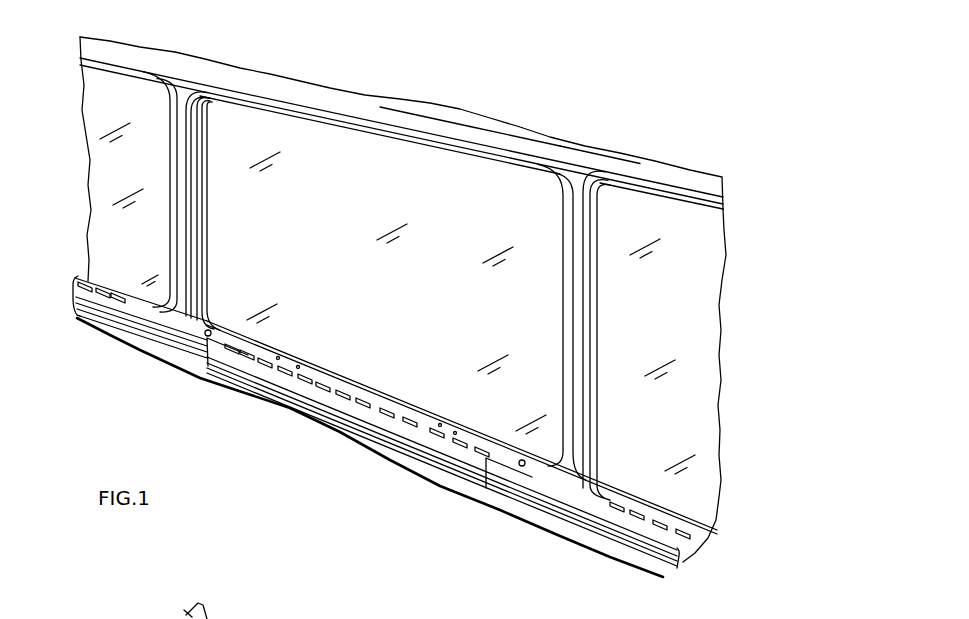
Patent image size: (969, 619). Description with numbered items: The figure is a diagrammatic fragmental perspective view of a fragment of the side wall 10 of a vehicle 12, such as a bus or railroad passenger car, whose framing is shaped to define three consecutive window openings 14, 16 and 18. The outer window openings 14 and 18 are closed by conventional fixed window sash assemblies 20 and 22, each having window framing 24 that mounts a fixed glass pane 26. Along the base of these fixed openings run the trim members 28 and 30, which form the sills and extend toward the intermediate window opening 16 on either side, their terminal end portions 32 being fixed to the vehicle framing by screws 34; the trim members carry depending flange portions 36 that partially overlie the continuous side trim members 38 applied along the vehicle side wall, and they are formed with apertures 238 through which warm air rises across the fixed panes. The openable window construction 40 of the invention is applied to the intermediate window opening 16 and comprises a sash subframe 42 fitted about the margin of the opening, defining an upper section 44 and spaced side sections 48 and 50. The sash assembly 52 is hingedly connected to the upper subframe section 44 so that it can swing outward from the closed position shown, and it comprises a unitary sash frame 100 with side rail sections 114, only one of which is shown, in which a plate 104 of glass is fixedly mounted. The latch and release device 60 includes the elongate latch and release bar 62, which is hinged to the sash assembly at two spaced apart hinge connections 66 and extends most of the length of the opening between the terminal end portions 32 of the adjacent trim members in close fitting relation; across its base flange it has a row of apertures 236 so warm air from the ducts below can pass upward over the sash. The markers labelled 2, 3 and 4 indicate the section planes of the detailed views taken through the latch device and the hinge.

The section line 2- 2 is at (385, 338).
The section line 3- 3 is at (309, 293).
The section line 4- 4 is at (408, 50).
The side wall 10 is at (697, 113).
The vehicle 12 is at (622, 120).
The window opening 14 is at (98, 200).
The window opening 16 is at (467, 173).
The window opening 18 is at (702, 237).
The fixed window sash assembly 20 is at (142, 98).
The fixed window sash assembly 22 is at (702, 322).
The window framing 24 is at (175, 85).
The fixed glass pane 26 is at (110, 90).
The trim member 28 is at (127, 328).
The trim member 30 is at (630, 565).
The terminal end portion 32 is at (210, 345).
The screw 34 is at (208, 330).
The depending flange portion 36 is at (165, 348).
The side trim member 38 is at (563, 525).
The openable window construction 40 is at (513, 185).
The sash subframe 42 is at (435, 135).
The upper section 44 is at (297, 110).
The side section 48 is at (185, 212).
The side section 50 is at (563, 332).
The sash assembly 52 is at (320, 343).
The latch and release device 60 is at (490, 413).
The latch and release bar 62 is at (447, 467).
The hinge connection 66 is at (297, 342).
The sash frame 100 is at (197, 160).
The plate 104 is at (228, 617).
The side rail section 114 is at (207, 240).
The aperture 236 is at (388, 408).
The aperture 238 is at (118, 297).